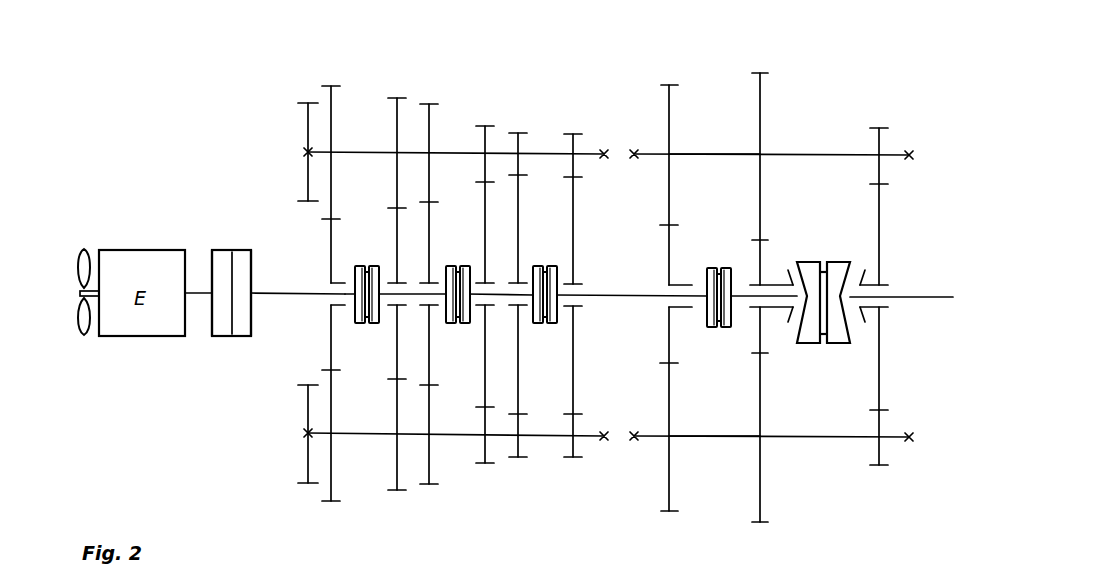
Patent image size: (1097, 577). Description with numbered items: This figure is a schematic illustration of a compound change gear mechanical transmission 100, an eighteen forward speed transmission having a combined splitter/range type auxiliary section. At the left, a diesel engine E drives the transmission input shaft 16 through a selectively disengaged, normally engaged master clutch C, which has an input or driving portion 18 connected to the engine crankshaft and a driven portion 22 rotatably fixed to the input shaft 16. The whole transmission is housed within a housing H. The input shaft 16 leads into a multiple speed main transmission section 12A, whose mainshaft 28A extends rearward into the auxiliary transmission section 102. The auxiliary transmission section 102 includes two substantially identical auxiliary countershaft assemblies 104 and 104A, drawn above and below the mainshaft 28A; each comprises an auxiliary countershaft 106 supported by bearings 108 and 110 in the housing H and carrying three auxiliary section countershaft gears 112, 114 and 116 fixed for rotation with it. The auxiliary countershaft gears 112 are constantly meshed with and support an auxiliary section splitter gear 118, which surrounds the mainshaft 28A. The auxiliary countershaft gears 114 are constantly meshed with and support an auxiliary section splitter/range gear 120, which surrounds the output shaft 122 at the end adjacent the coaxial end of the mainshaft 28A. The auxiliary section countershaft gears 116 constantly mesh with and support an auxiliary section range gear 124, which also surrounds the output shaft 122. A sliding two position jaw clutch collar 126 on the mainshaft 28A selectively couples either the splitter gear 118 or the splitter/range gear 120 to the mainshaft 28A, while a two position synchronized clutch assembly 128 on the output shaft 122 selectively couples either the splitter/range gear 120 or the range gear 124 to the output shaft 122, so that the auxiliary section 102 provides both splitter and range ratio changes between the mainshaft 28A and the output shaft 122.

The housing H is at (307, 128).
The master clutch C is at (230, 248).
The input shaft 16 is at (290, 292).
The driving portion 18 is at (217, 337).
The driven portion 22 is at (243, 337).
The main transmission section 12A is at (457, 108).
The compound change gear mechanical transmission 100 is at (538, 108).
The auxiliary transmission section 102 is at (849, 100).
The auxiliary countershaft assembly 104 is at (800, 154).
The auxiliary countershaft assembly 104A is at (786, 455).
The auxiliary countershaft 106 is at (712, 153).
The bearing 108 is at (628, 148).
The bearing 110 is at (912, 154).
The auxiliary section countershaft gear 112 is at (672, 98).
The auxiliary section countershaft gear 114 is at (763, 98).
The auxiliary section countershaft gear 116 is at (878, 143).
The auxiliary section splitter gear 118 is at (667, 263).
The auxiliary section splitter/range gear 120 is at (758, 252).
The output shaft 122 is at (927, 297).
The auxiliary section range gear 124 is at (880, 227).
The sliding two position jaw clutch collar 126 is at (722, 330).
The two position synchronized clutch assembly 128 is at (810, 256).
The mainshaft 28A is at (622, 298).